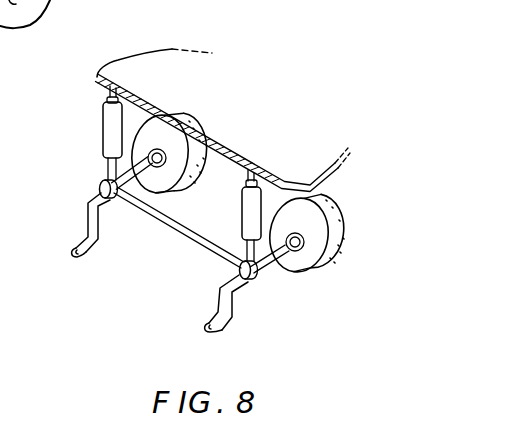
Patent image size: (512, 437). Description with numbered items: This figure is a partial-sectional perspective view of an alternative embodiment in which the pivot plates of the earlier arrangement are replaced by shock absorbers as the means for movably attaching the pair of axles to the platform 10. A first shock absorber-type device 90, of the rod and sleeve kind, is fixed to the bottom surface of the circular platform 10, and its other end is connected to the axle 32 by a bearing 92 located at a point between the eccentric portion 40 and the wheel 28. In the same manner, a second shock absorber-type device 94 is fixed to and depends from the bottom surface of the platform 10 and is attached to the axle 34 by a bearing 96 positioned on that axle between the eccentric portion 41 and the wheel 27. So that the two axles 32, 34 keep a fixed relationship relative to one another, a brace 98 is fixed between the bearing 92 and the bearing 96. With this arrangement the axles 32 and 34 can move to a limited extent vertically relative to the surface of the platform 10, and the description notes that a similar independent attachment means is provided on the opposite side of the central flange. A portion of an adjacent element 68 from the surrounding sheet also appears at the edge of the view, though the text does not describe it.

The platform 10 is at (199, 73).
The wheel 27 is at (167, 138).
The wheel 28 is at (320, 200).
The axle 32 is at (222, 277).
The axle 34 is at (84, 201).
The eccentric portion 40 is at (224, 330).
The eccentric portion 41 is at (70, 243).
The wheel of adjacent figure 68 is at (0, 32).
The first shock absorber-type device 90 is at (243, 208).
The bearing 92 is at (258, 277).
The second shock absorber-type device 94 is at (105, 129).
The bearing 96 is at (100, 183).
The brace 98 is at (147, 218).